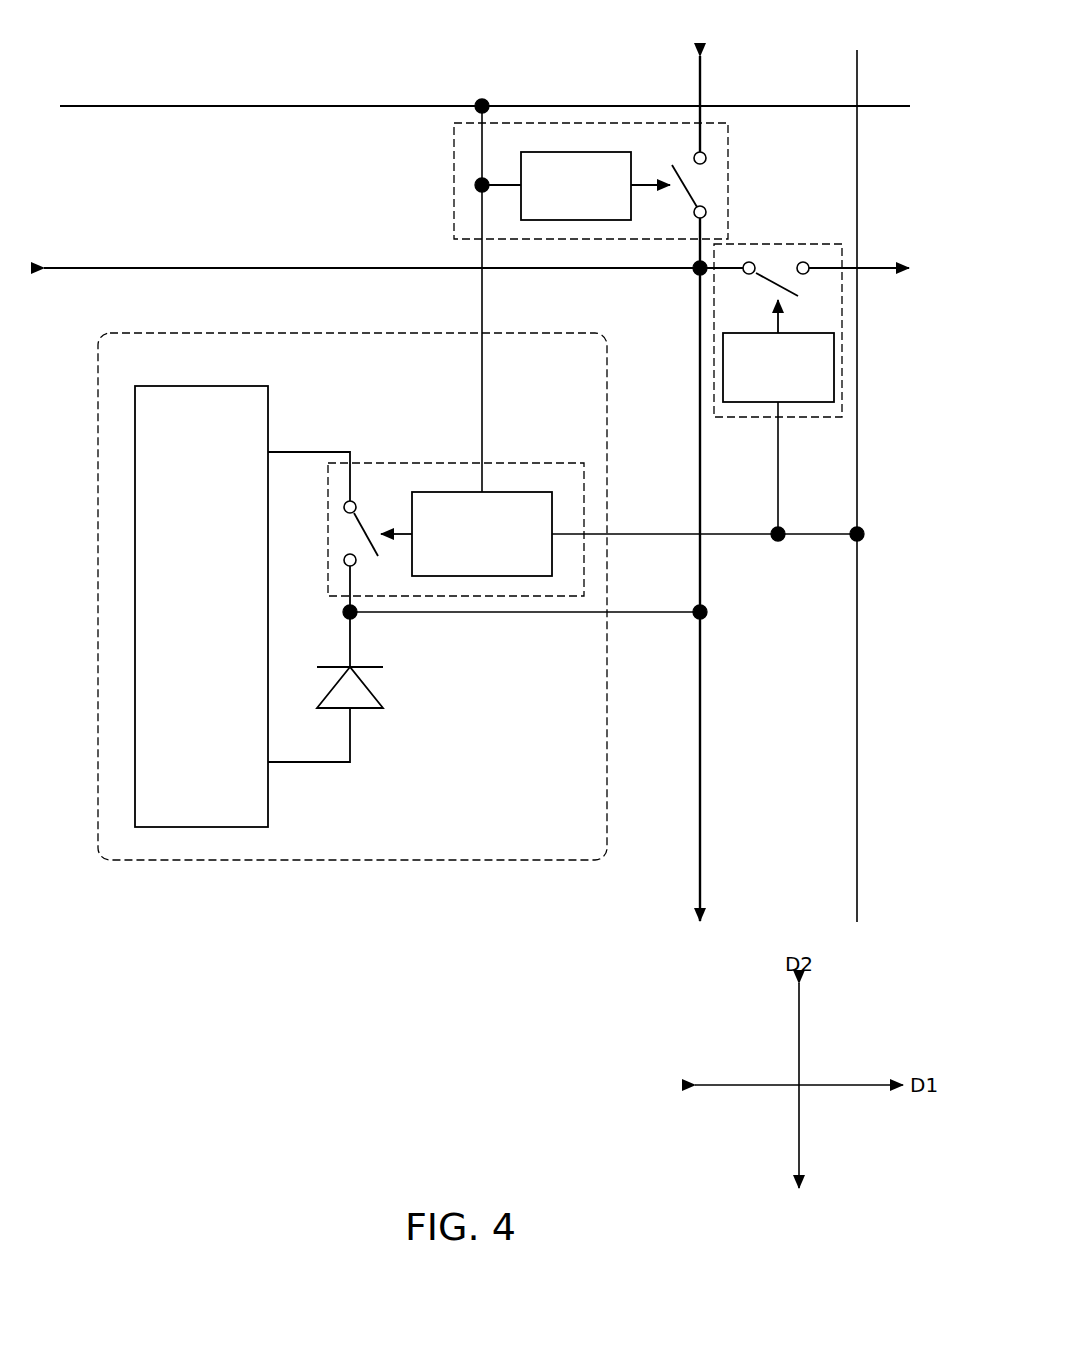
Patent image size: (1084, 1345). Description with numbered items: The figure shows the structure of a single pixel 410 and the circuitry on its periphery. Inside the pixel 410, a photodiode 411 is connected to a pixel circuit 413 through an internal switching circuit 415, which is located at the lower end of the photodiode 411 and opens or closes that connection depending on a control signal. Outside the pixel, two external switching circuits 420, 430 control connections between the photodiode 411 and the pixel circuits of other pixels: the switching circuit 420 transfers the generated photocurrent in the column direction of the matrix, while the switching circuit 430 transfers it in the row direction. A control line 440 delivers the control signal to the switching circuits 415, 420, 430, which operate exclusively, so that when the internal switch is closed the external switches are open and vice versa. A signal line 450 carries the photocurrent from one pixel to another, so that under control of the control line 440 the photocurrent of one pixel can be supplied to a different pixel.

The pixel 410 is at (353, 333).
The photodiode 411 is at (375, 698).
The pixel circuit 413 is at (202, 386).
The switching circuit 415 is at (524, 463).
The switching circuit 420 is at (728, 178).
The switching circuit 430 is at (780, 244).
The control line 440 is at (857, 88).
The signal line 450 is at (700, 97).